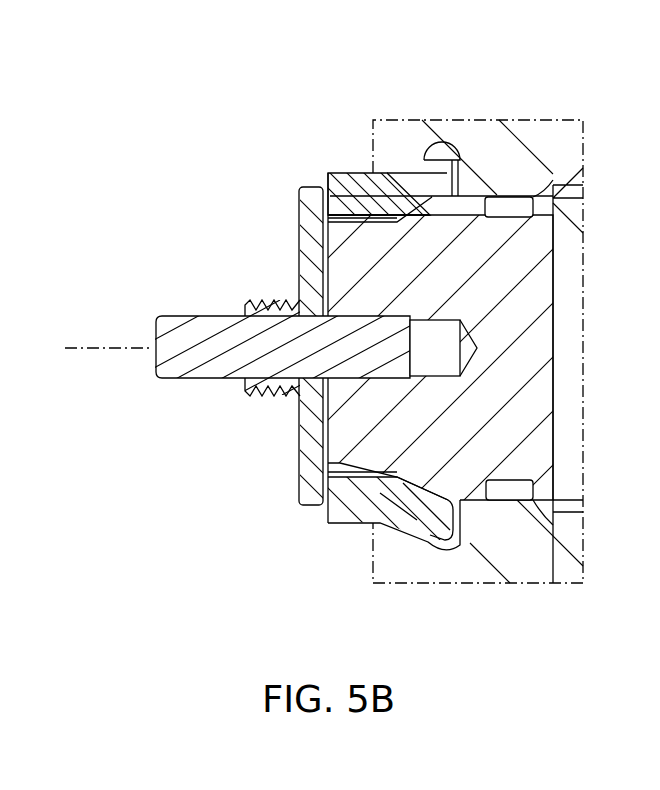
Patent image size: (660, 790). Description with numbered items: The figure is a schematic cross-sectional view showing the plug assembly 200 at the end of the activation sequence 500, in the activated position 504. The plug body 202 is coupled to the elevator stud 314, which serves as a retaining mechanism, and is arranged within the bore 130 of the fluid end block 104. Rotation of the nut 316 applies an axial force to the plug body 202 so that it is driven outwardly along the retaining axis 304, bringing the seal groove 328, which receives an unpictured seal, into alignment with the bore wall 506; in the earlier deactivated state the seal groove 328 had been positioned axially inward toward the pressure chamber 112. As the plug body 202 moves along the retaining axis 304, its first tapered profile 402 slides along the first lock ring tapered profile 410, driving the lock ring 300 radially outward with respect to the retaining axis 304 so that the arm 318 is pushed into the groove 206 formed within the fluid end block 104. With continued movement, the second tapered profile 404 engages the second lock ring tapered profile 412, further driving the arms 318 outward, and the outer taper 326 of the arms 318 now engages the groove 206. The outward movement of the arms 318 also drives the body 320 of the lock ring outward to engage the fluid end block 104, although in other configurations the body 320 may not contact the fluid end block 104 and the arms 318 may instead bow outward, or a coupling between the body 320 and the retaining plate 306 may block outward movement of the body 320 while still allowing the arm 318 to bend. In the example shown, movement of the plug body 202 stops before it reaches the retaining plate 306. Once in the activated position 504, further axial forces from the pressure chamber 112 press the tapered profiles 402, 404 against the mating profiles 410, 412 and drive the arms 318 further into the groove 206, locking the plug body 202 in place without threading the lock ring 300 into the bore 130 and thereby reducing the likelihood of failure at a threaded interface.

The activation sequence 500 is at (185, 134).
The lock ring 300 is at (331, 127).
The arms 318 is at (458, 157).
The outer taper 326 is at (425, 175).
The groove 206 is at (452, 142).
The bore 130 is at (505, 162).
The activated position 504 is at (603, 119).
The second lock ring tapered profile 412 is at (445, 205).
The first lock ring tapered profile 410 is at (430, 215).
The plug body 202 is at (352, 255).
The nut 316 is at (262, 303).
The elevator stud 314 is at (180, 335).
The retaining axis 304 is at (104, 350).
The retaining plate 306 is at (305, 450).
The plug assembly 200 is at (203, 526).
The body 320 is at (383, 525).
The fluid end block 104 is at (410, 568).
The bore wall 506 is at (503, 502).
The seal groove 328 is at (520, 479).
The pressure chamber 112 is at (570, 340).
The first tapered profile 402 is at (368, 233).
The second tapered profile 404 is at (440, 205).